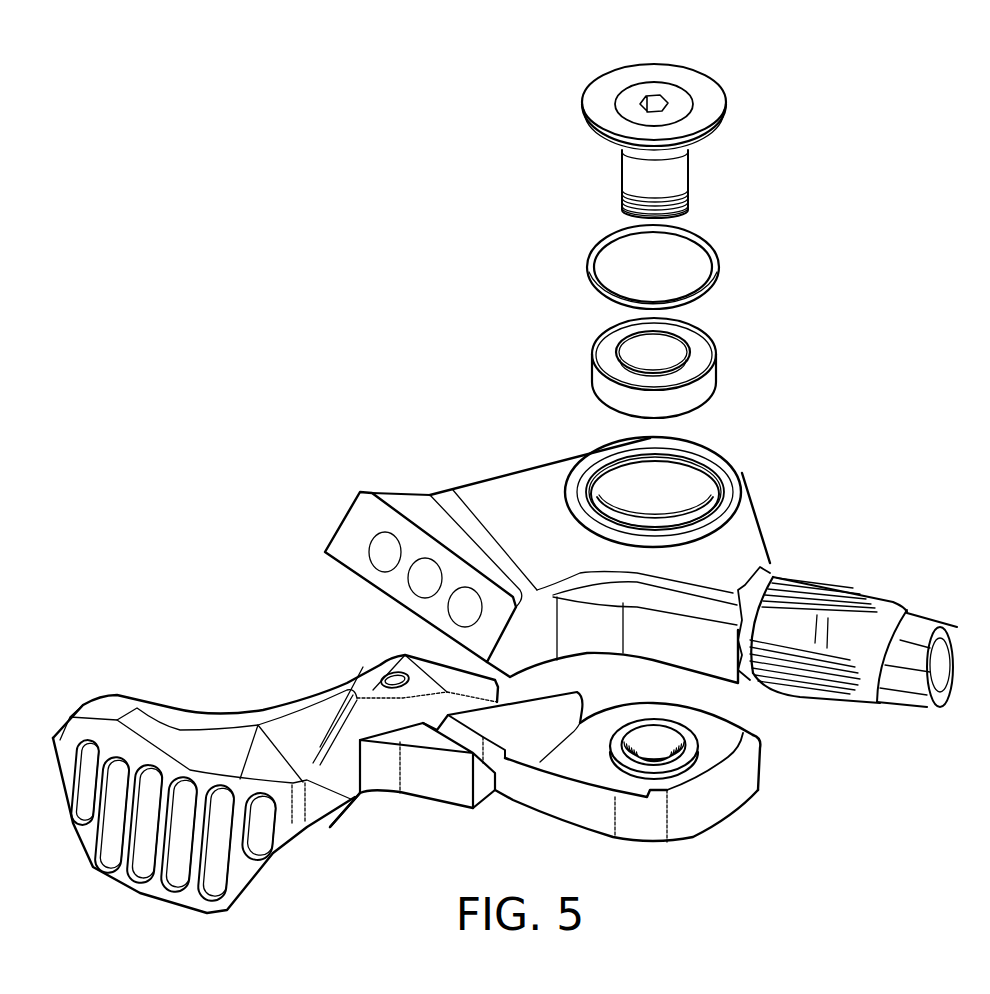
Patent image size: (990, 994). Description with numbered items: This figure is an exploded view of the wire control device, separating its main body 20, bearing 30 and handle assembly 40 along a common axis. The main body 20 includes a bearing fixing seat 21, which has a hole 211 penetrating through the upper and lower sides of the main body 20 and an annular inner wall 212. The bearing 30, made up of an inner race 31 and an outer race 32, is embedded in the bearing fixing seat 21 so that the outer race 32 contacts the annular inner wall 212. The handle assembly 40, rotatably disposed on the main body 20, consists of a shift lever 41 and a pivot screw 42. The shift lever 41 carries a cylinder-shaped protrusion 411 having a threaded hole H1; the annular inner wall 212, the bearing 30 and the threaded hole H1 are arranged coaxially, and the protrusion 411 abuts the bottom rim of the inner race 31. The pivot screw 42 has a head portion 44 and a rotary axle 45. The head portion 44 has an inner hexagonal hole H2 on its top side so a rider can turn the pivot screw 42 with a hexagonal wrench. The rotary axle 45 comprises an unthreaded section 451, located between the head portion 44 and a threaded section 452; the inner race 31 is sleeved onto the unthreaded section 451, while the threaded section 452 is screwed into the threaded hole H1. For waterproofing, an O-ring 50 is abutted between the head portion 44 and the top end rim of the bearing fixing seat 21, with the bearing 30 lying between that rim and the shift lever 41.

The main body 20 is at (641, 549).
The bearing fixing seat 21 is at (674, 469).
The hole 211 is at (645, 520).
The annular inner wall 212 is at (700, 490).
The bearing 30 is at (743, 353).
The inner race 31 is at (670, 352).
The outer race 32 is at (708, 387).
The handle assembly 40 is at (462, 86).
The shift lever 41 is at (425, 751).
The protrusion 411 is at (668, 799).
The pivot screw 42 is at (548, 112).
The head portion 44 is at (681, 81).
The rotary axle 45 is at (741, 172).
The unthreaded section 451 is at (670, 163).
The threaded section 452 is at (673, 188).
The O-ring 50 is at (720, 263).
The threaded hole H1 is at (678, 753).
The inner hexagonal hole H2 is at (657, 101).